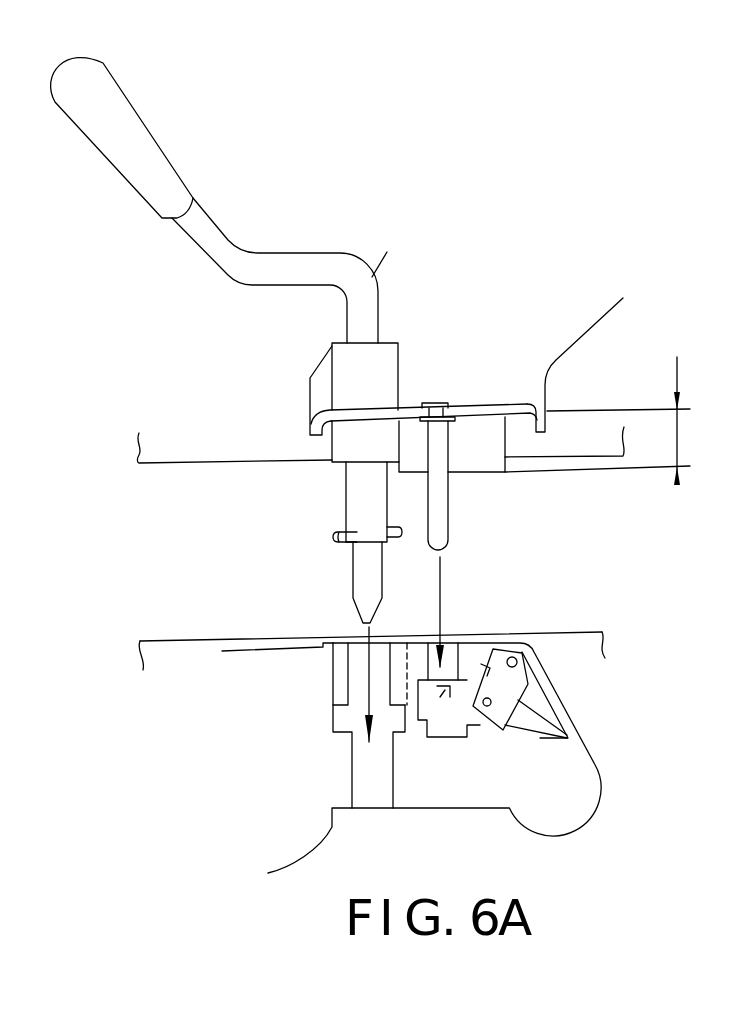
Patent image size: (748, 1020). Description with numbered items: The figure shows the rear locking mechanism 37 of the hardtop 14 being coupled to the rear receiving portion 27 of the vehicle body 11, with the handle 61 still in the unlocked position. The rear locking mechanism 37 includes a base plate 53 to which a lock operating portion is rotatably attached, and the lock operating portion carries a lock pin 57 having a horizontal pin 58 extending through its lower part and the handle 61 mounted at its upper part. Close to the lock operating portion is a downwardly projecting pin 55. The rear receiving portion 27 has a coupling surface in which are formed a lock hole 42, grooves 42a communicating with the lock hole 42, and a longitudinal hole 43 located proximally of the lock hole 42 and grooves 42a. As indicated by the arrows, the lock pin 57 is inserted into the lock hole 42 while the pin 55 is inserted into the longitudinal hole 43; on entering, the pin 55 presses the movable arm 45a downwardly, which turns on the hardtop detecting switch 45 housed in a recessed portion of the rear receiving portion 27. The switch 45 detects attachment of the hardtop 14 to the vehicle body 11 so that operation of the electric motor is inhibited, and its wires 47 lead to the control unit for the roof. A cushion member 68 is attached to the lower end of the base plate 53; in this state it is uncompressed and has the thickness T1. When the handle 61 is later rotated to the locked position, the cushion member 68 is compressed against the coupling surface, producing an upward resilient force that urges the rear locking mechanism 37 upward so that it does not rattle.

The handle 61 is at (167, 140).
The rear locking mechanism 37 is at (296, 383).
The base plate 53 is at (613, 314).
The thickness T1 is at (623, 404).
The pin 55 is at (448, 528).
The cushion member 68 is at (480, 477).
The hardtop 14 is at (178, 468).
The horizontal pin 58 is at (333, 533).
The lock pin 57 is at (348, 567).
The vehicle body 11 is at (165, 634).
The rear receiving portion 27 is at (300, 738).
The lock hole 42 is at (350, 667).
The grooves 42a is at (338, 679).
The longitudinal hole 43 is at (448, 655).
The movable arm 45a is at (467, 685).
The hardtop detecting switch 45 is at (495, 716).
The wires 47 is at (540, 704).